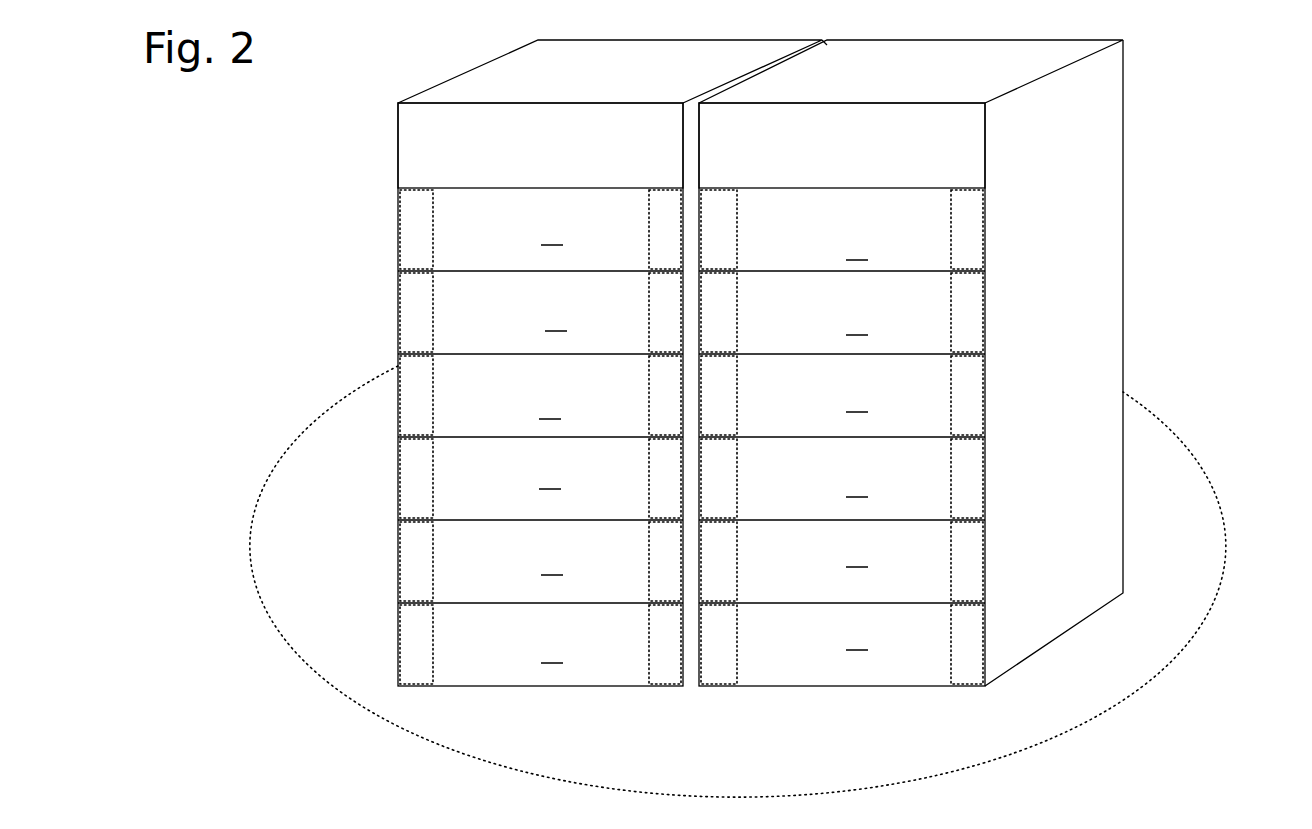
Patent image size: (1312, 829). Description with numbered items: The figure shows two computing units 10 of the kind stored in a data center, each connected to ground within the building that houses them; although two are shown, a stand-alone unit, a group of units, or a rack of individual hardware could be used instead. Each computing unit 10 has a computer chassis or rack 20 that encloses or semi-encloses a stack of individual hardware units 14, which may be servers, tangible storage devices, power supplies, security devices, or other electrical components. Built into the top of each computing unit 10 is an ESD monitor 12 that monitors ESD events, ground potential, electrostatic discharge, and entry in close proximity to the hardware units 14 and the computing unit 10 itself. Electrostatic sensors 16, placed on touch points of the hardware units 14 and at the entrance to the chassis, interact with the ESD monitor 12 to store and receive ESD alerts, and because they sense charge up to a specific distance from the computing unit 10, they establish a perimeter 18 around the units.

The computing unit 10 is at (435, 80).
The ESD monitor 12 is at (402, 146).
The individual hardware unit 14 is at (691, 443).
The electrostatic sensor 16 is at (416, 316).
The perimeter 18 is at (316, 414).
The computer chassis or rack 20 is at (1082, 240).